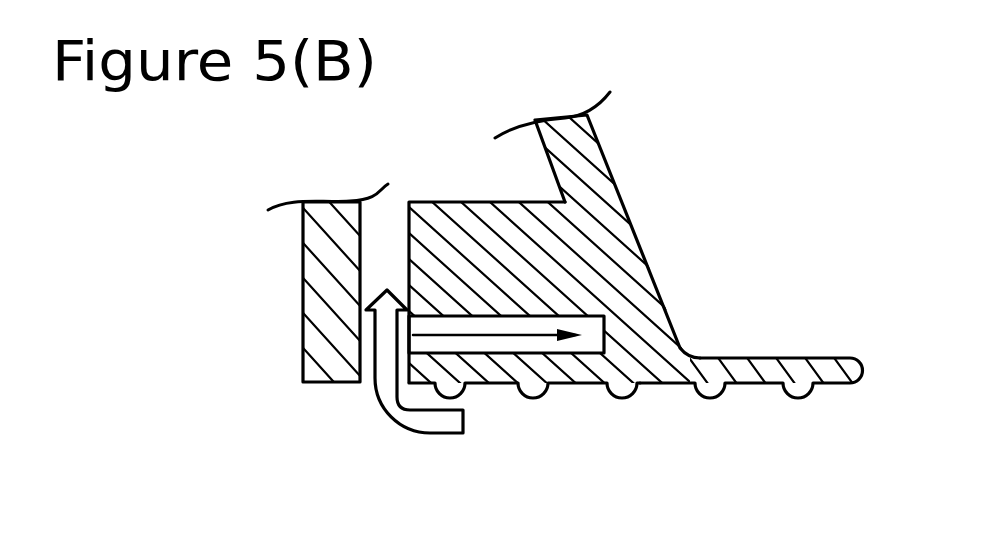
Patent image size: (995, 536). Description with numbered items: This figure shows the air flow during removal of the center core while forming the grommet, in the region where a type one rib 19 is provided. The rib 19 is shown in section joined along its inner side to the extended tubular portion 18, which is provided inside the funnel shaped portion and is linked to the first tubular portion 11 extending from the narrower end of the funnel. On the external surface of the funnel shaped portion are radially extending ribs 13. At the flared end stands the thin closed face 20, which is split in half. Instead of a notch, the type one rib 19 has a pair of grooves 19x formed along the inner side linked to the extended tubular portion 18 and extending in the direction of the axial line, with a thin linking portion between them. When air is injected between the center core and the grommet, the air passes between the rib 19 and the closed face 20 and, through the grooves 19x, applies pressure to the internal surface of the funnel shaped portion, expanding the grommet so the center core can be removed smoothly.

The first tubular portion 11 is at (750, 378).
The ribs 13 is at (577, 148).
The extended tubular portion 18 is at (570, 367).
The rib 19 is at (459, 217).
The grooves 19x is at (492, 343).
The closed face 20 is at (303, 257).